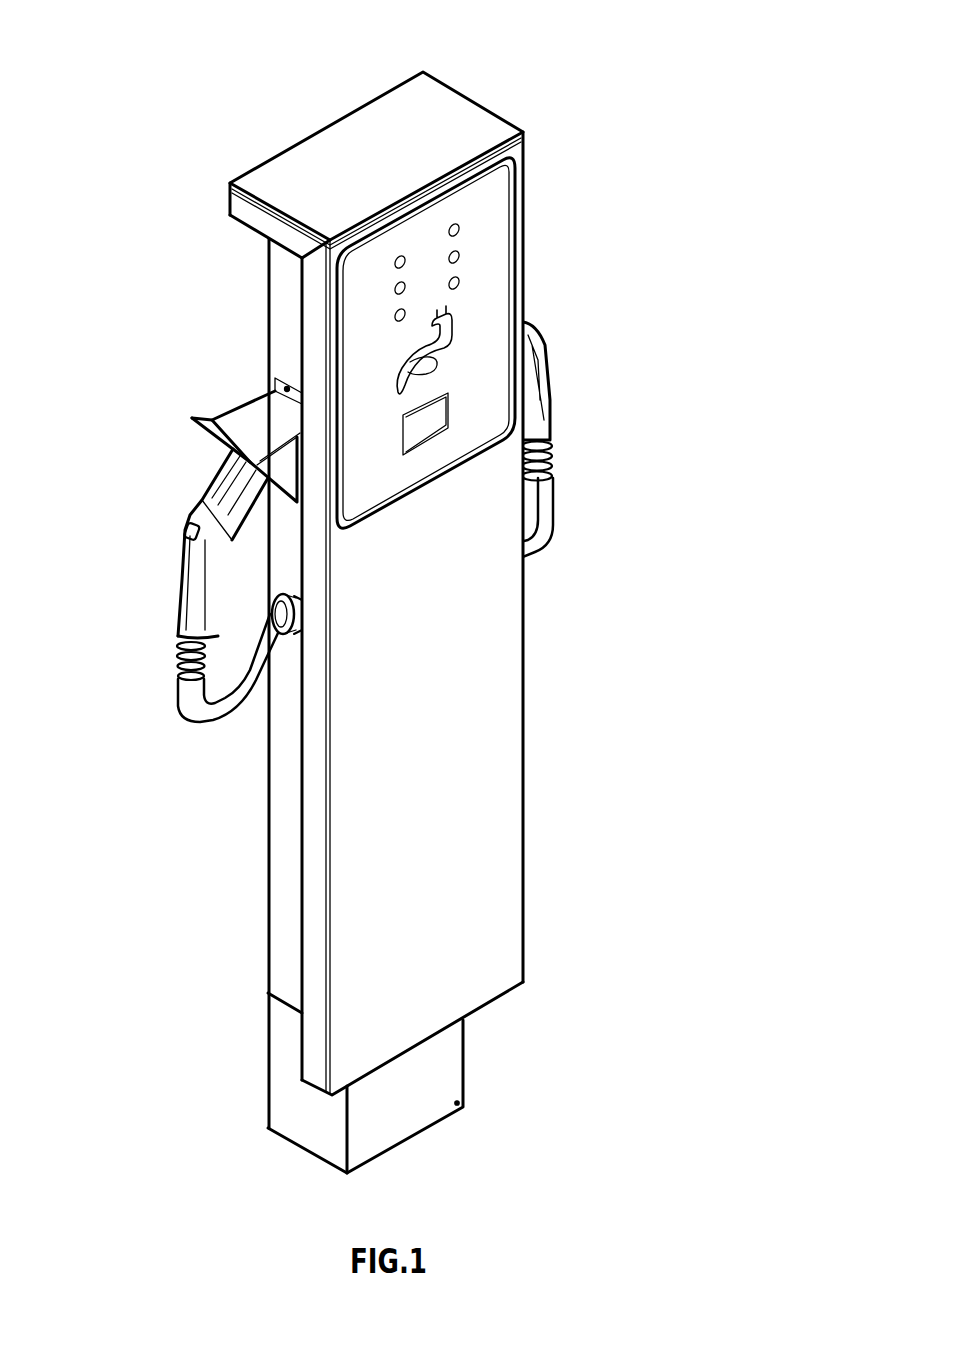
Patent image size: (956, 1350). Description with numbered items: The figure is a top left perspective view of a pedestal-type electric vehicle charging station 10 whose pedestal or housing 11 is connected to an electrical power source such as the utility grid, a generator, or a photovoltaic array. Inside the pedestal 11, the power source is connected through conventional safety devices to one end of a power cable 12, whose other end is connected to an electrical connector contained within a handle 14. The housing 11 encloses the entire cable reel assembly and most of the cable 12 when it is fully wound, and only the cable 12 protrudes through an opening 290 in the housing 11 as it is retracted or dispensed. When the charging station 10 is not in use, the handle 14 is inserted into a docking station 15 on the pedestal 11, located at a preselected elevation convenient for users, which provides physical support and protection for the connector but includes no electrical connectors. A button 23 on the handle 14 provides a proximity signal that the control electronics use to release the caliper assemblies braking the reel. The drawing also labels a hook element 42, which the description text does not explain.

The electric vehicle charging station 10 is at (540, 88).
The pedestal or housing 11 is at (265, 170).
The power cable 12 is at (187, 705).
The handle 14 is at (183, 590).
The docking station 15 is at (180, 462).
The button 23 is at (187, 532).
The connector hook 42 is at (243, 420).
The opening 290 is at (275, 643).